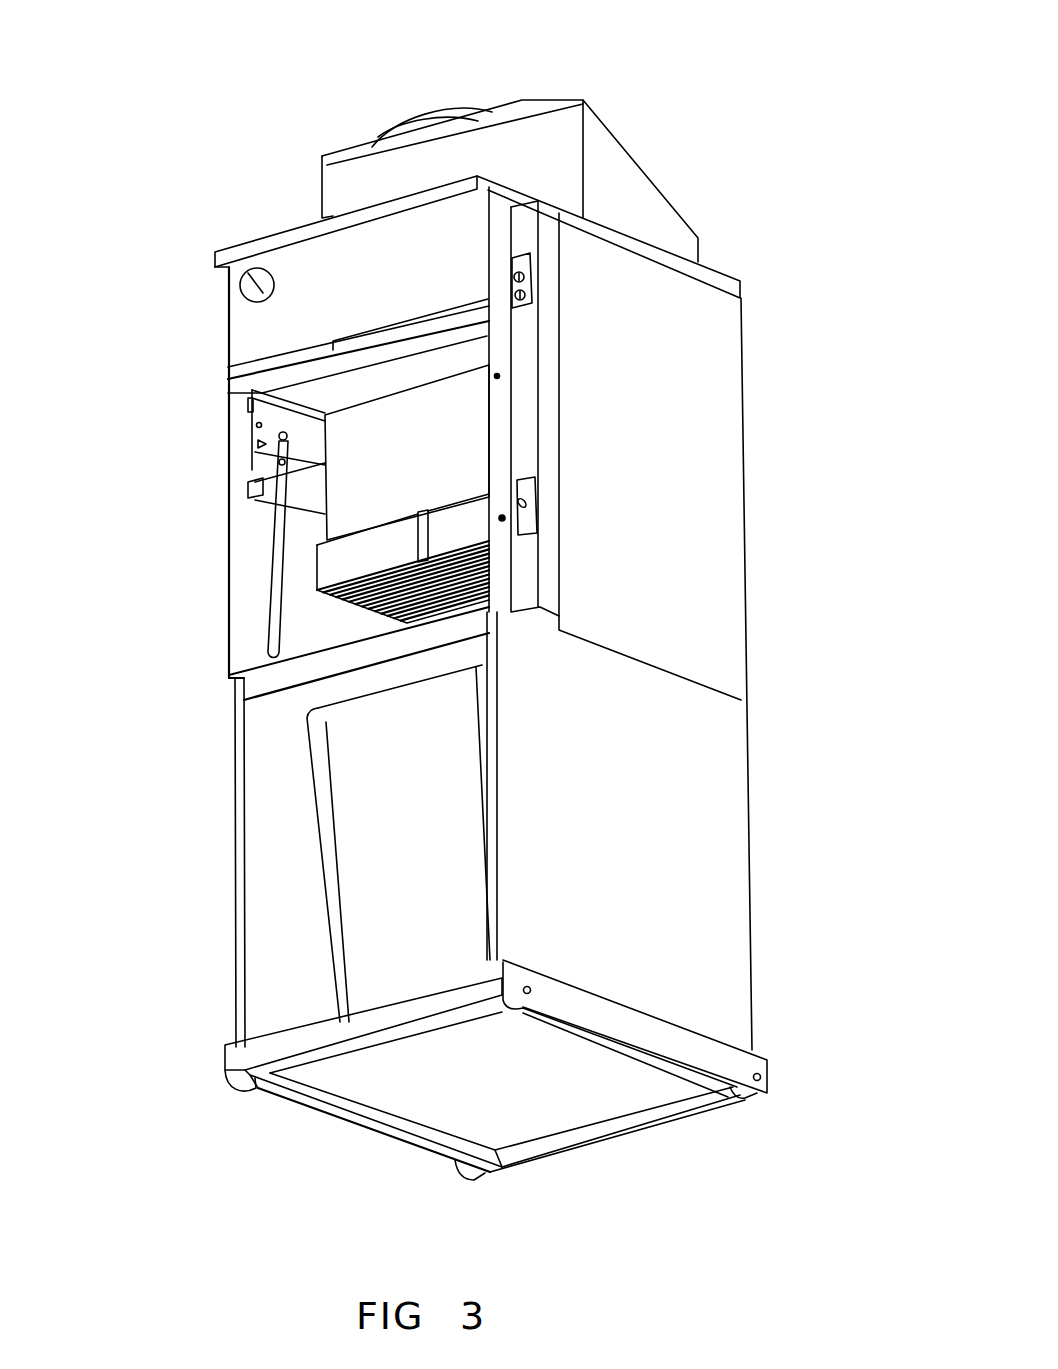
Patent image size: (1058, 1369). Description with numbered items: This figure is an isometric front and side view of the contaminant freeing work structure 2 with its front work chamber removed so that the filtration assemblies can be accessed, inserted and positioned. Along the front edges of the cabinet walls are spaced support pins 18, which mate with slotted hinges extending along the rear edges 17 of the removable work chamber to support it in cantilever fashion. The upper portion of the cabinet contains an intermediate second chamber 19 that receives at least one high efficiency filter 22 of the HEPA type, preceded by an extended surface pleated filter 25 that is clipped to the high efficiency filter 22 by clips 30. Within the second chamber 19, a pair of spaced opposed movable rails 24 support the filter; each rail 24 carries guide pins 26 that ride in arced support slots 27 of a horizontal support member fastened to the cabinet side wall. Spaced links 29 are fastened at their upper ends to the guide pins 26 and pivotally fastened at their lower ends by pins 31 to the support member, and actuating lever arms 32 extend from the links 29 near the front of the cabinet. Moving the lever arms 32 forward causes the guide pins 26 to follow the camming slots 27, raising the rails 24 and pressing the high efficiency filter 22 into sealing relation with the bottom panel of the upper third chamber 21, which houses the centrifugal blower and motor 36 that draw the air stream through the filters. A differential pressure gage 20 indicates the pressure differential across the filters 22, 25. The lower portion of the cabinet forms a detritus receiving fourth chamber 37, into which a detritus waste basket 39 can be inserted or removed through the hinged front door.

The contaminant freeing work structure 2 is at (820, 485).
The rear edges 17 is at (492, 420).
The support pins 18 is at (497, 375).
The intermediate second chamber 19 is at (247, 637).
The differential pressure gage 20 is at (267, 278).
The upper third chamber 21 is at (622, 212).
The high efficiency filter 22 is at (443, 473).
The movable rails 24 is at (246, 410).
The extended surface pleated filter 25 is at (348, 557).
The guide pins 26 is at (257, 424).
The arced support slots 27 is at (258, 444).
The links 29 is at (280, 461).
The clips 30 is at (422, 540).
The pins 31 is at (262, 490).
The actuating lever arms 32 is at (272, 558).
The motor 36 is at (417, 110).
The lower detritus receiving fourth chamber 37 is at (307, 947).
The detritus waste basket 39 is at (436, 853).